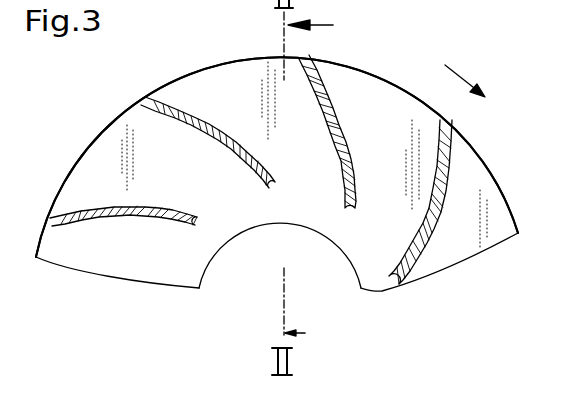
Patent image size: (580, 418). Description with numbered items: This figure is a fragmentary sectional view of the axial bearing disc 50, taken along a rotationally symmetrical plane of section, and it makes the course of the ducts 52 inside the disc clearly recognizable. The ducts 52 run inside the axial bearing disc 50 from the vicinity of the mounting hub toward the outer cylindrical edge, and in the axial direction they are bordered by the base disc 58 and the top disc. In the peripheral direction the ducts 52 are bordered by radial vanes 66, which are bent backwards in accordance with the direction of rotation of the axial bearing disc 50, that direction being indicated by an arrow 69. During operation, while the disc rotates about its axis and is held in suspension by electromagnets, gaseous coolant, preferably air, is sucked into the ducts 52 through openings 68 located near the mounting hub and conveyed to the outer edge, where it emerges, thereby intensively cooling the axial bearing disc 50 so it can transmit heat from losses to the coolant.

The axial bearing disc 50 is at (478, 141).
The ducts 52 is at (193, 82).
The base disc 58 is at (118, 115).
The radial vanes 66 is at (163, 210).
The openings 68 is at (303, 247).
The arrow 69 is at (445, 63).